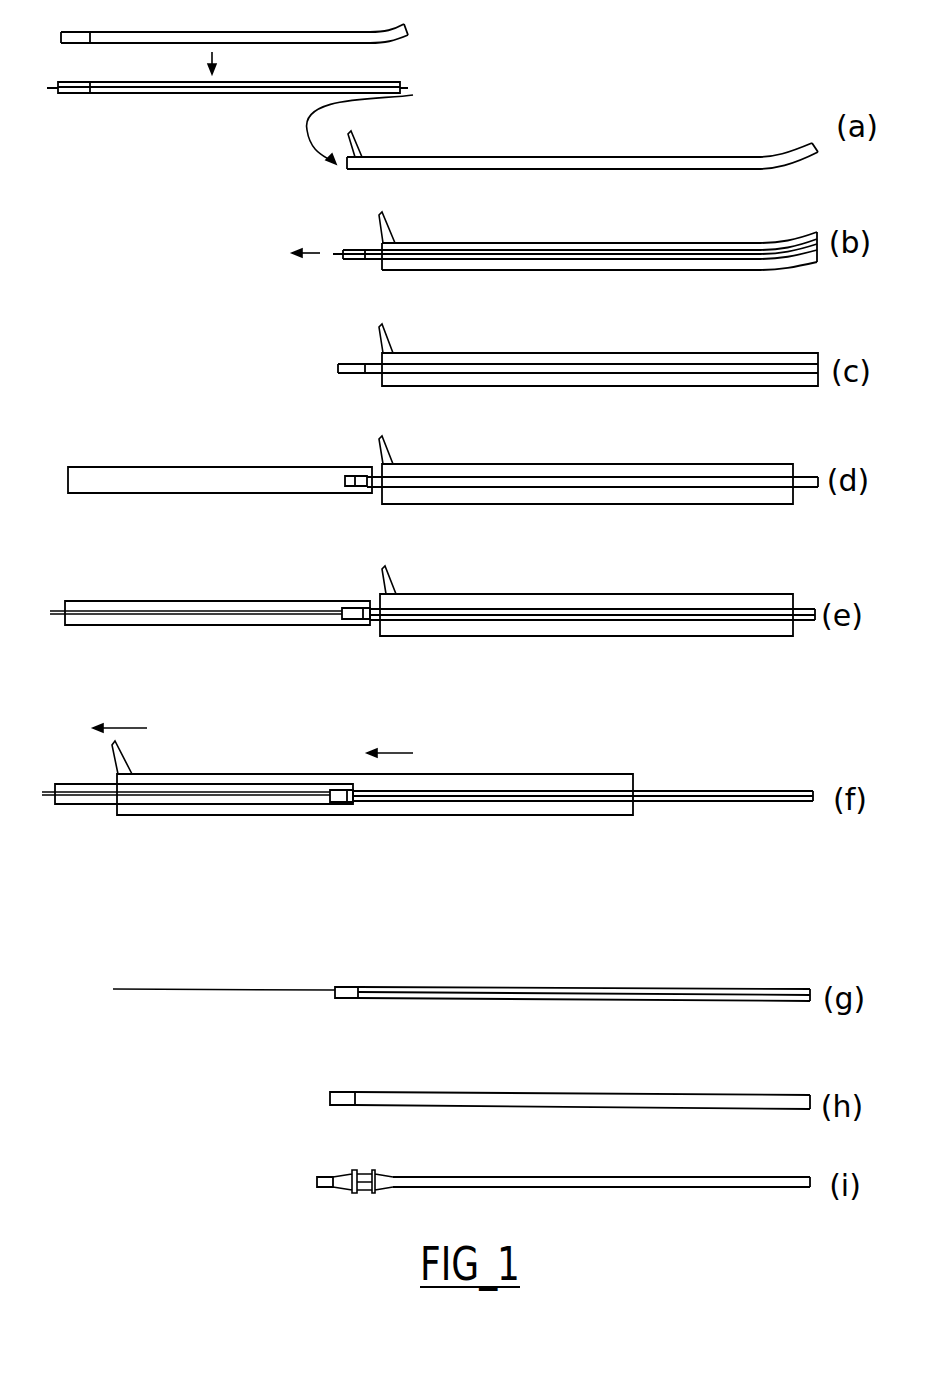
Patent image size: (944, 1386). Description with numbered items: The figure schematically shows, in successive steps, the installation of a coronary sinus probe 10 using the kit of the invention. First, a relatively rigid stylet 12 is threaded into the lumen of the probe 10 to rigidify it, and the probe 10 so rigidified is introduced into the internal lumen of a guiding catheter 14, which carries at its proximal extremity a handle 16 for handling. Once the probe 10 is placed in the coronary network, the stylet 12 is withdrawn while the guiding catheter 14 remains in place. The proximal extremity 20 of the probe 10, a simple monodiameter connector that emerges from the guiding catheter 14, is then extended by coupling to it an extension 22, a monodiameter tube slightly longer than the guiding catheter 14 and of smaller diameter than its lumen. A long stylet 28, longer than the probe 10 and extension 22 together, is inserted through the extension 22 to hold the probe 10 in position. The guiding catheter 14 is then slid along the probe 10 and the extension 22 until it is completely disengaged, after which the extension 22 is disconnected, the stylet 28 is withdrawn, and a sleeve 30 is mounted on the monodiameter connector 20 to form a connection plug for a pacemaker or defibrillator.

The coronary sinus probe 10 is at (288, 44).
The stylet 12 is at (53, 88).
The guiding catheter 14 is at (708, 157).
The handle 16 is at (357, 150).
The proximal extremity (monodiameter connector) 20 is at (347, 374).
The extension 22 is at (230, 466).
The stylet 28 is at (57, 610).
The sleeve 30 is at (362, 1193).